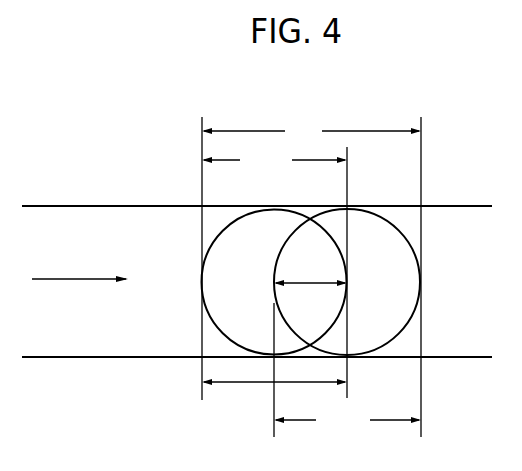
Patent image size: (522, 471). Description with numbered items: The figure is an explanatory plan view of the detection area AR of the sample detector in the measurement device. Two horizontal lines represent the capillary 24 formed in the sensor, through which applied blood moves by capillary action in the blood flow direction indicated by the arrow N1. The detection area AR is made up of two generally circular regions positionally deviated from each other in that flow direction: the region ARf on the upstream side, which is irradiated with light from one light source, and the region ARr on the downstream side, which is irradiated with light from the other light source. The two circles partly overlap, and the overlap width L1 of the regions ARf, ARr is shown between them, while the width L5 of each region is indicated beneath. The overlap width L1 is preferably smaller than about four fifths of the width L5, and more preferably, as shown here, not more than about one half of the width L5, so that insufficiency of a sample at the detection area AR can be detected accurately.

The capillary 24 is at (53, 217).
The arrow indicating blood flow direction N1 is at (80, 266).
The detection area AR is at (311, 277).
The region on the upstream side ARf is at (274, 272).
The region on the downstream side ARr is at (347, 370).
The overlap width L1 is at (310, 272).
The width of each region L5 is at (239, 383).